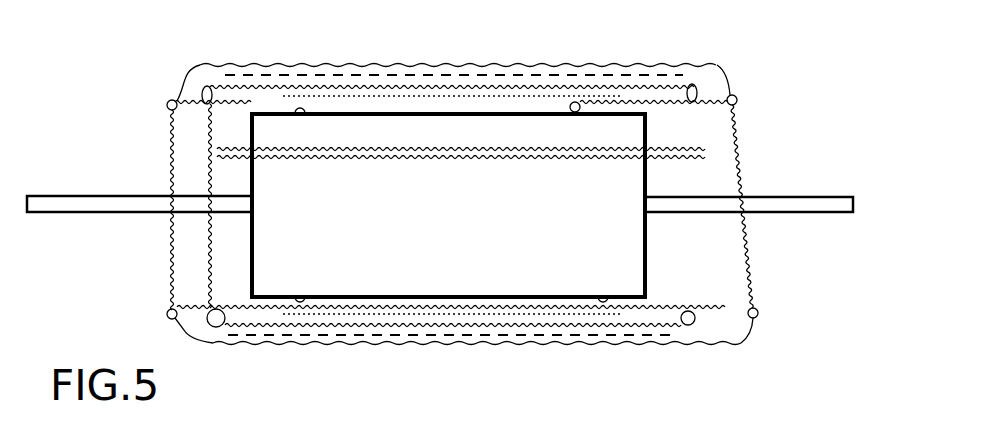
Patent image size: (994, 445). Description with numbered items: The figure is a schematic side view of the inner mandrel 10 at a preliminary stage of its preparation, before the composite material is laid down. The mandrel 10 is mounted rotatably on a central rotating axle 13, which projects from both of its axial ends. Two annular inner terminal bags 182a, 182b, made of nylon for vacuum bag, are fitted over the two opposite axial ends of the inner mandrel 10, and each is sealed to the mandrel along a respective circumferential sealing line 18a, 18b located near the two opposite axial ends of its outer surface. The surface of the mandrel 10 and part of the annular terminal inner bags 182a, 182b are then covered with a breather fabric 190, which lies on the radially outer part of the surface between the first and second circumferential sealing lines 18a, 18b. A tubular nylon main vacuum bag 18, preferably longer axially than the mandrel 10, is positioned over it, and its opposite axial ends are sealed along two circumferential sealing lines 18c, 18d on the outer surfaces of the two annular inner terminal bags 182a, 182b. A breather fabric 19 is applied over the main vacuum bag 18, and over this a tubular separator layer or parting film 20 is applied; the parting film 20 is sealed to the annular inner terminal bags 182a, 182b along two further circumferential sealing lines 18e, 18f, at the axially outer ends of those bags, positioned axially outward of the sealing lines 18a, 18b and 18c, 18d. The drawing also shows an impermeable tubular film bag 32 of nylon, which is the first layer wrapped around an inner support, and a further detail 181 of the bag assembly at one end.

The inner mandrel 10 is at (362, 300).
The central rotating axle 13 is at (43, 205).
The main vacuum bag 18 is at (480, 85).
The first circumferential sealing line 18a is at (300, 107).
The second circumferential sealing line 18b is at (572, 102).
The circumferential sealing line of main vacuum bag 18c is at (176, 102).
The circumferential sealing line of main vacuum bag 18d is at (694, 90).
The circumferential sealing line of parting film 18e is at (166, 316).
The circumferential sealing line of parting film 18f is at (736, 103).
The breather fabric 19 is at (538, 75).
The separator layer (parting film) 20 is at (428, 63).
The impermeable tubular film bag 32 is at (213, 146).
The rolled sheet end 181 is at (207, 310).
The annular inner terminal bag 182a is at (245, 102).
The annular inner terminal bag 182b is at (663, 100).
The breather fabric 190 is at (358, 94).